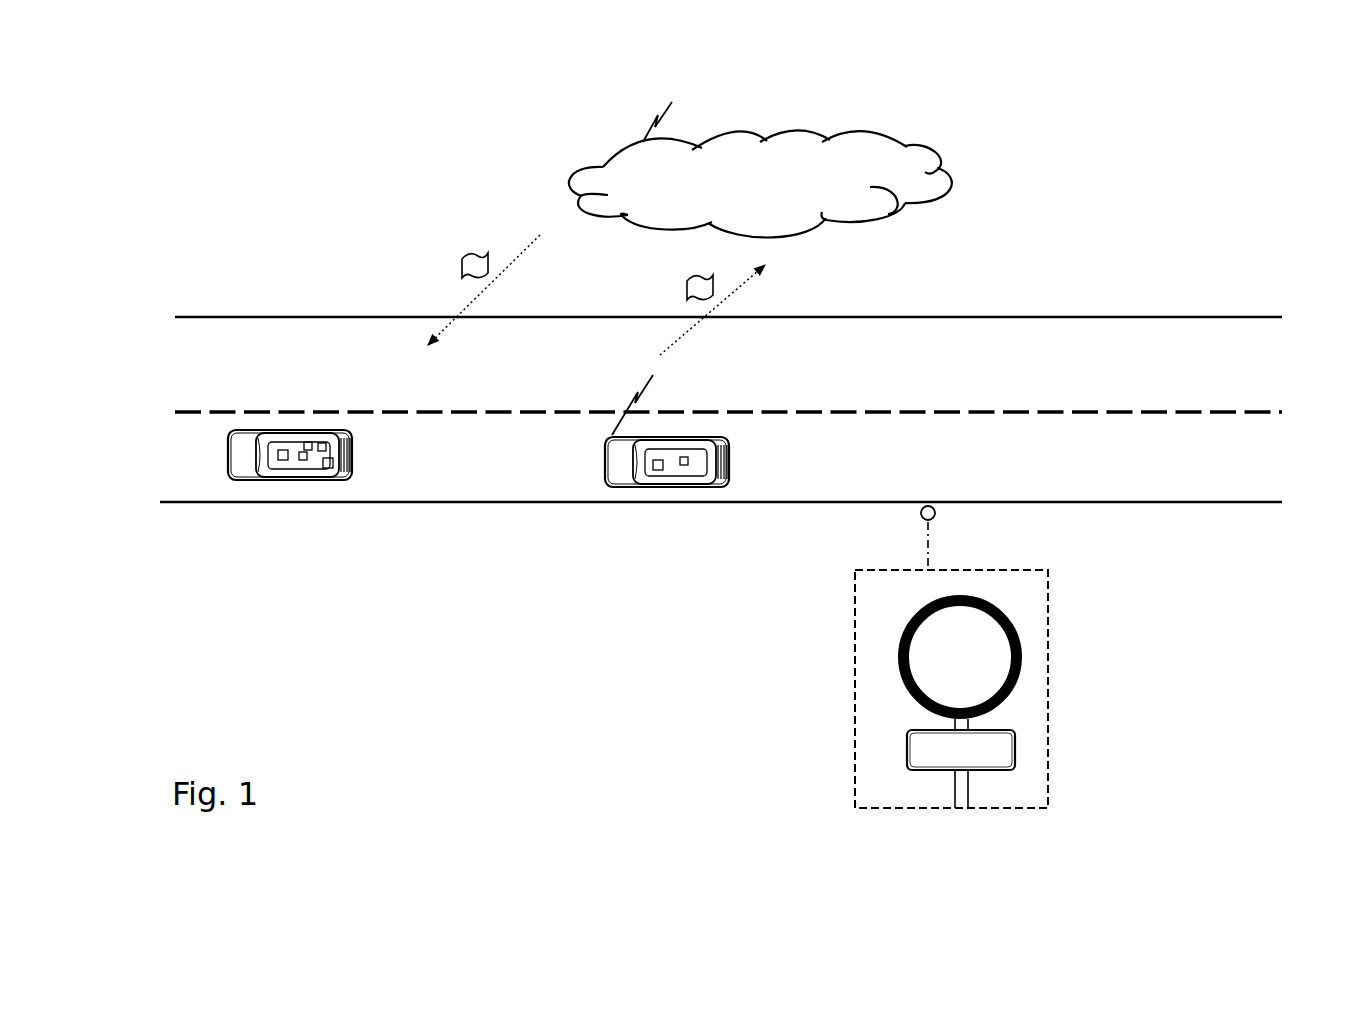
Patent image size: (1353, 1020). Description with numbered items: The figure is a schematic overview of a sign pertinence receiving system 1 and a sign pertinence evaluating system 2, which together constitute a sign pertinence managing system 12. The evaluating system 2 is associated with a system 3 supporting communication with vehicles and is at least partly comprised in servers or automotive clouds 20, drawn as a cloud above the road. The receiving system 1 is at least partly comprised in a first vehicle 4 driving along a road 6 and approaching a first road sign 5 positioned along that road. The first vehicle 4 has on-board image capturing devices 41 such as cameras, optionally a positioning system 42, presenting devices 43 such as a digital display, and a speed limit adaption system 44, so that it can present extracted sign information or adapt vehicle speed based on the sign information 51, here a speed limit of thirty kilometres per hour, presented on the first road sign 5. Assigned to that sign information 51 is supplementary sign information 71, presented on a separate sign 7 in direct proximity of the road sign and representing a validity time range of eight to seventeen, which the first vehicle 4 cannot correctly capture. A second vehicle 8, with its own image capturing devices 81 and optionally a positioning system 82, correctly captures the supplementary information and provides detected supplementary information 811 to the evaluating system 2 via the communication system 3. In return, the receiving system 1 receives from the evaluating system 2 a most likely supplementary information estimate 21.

The sign pertinence receiving system 1 is at (398, 372).
The sign pertinence evaluating system 2 is at (948, 137).
The system supporting communication with one or more vehicles 3 is at (578, 162).
The first vehicle 4 is at (238, 488).
The first road sign 5 is at (940, 515).
The road 6 is at (1060, 282).
The sign 7 is at (1014, 746).
The second vehicle 8 is at (617, 491).
The sign pertinence managing system 12 is at (275, 140).
The servers and/or automotive clouds 20 is at (750, 137).
The most likely supplementary information estimate 21 is at (462, 262).
The image capturing devices 41 is at (336, 440).
The positioning system 42 is at (306, 440).
The presenting devices 43 is at (336, 440).
The speed limit adaption system 44 is at (306, 440).
The sign information 51 is at (1030, 692).
The supplementary sign information 71 is at (995, 759).
The image capturing devices 81 is at (681, 466).
The positioning system 82 is at (656, 470).
The detected supplementary information 811 is at (712, 283).